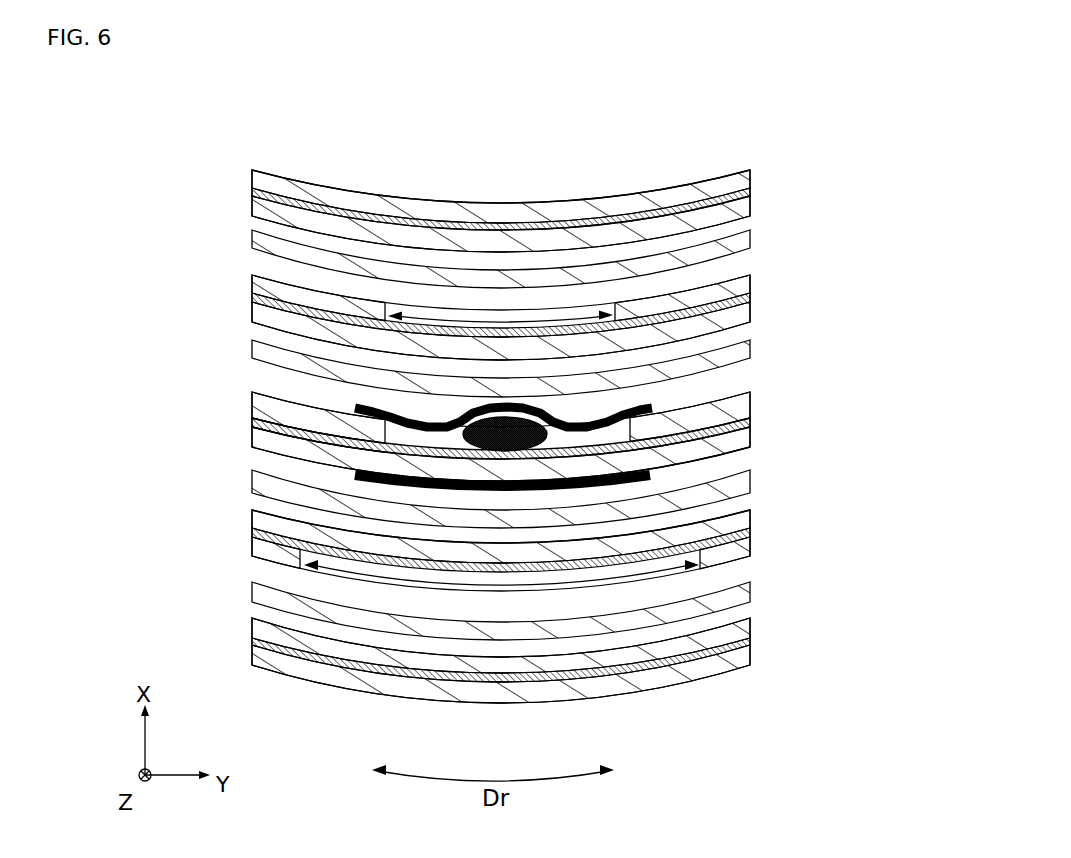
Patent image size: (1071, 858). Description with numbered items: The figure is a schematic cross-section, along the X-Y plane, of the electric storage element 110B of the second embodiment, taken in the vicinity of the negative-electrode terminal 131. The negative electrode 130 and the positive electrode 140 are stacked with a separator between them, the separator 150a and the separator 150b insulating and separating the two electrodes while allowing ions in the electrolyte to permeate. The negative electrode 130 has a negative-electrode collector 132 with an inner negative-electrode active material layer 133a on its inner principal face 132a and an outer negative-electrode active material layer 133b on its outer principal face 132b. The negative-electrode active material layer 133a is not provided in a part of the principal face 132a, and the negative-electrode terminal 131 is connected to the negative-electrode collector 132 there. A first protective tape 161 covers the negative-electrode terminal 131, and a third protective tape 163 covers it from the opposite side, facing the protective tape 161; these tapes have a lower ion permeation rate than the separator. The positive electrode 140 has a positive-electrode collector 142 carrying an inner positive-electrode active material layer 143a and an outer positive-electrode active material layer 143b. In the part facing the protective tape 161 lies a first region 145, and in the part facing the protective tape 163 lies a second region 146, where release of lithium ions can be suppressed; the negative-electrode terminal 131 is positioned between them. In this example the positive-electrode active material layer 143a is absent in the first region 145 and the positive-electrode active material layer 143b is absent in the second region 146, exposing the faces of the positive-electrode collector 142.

The electric storage element 110B is at (695, 142).
The negative electrode 130 is at (840, 90).
The negative-electrode active material layer 133a is at (748, 170).
The negative-electrode collector 132 is at (742, 186).
The negative-electrode active material layer 133b is at (733, 207).
The principal face 132a is at (286, 411).
The principal face 132b is at (282, 446).
The positive electrode 140 is at (847, 223).
The positive-electrode active material layer 143a is at (750, 280).
The positive-electrode collector 142 is at (745, 300).
The positive-electrode active material layer 143b is at (745, 316).
The first region 145 is at (533, 317).
The second region 146 is at (445, 575).
The separator 150a is at (256, 240).
The separator 150b is at (256, 348).
The protective tape 161 is at (373, 406).
The protective tape 163 is at (370, 487).
The negative-electrode terminal 131 is at (550, 414).